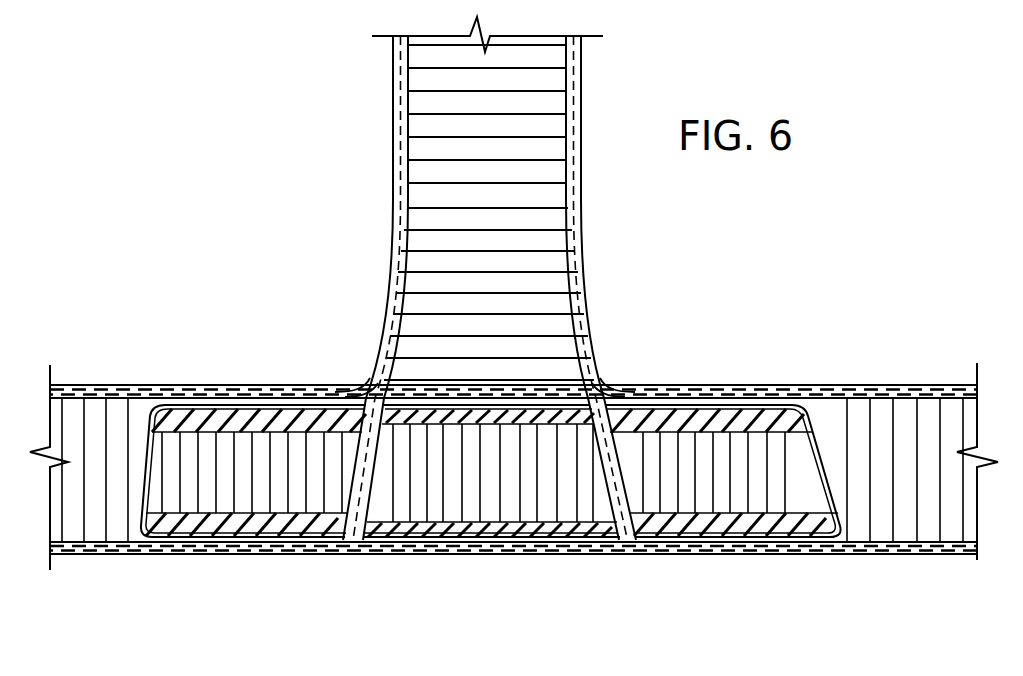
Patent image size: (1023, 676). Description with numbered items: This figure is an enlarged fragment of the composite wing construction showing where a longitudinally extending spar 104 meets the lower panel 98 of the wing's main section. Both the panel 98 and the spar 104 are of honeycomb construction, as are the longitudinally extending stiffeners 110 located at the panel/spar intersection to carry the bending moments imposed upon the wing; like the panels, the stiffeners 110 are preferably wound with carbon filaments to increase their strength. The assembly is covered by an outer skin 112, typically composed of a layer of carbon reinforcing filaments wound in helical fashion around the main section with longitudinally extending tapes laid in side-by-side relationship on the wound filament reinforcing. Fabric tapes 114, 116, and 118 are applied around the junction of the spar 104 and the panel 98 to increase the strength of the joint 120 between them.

The lower panel 98 is at (867, 542).
The spar 104 is at (420, 127).
The stiffener 110 is at (485, 550).
The outer skin 112 is at (278, 550).
The fabric tape 114 is at (397, 255).
The fabric tape 116 is at (588, 283).
The fabric tape 118 is at (272, 385).
The joint 120 is at (620, 369).